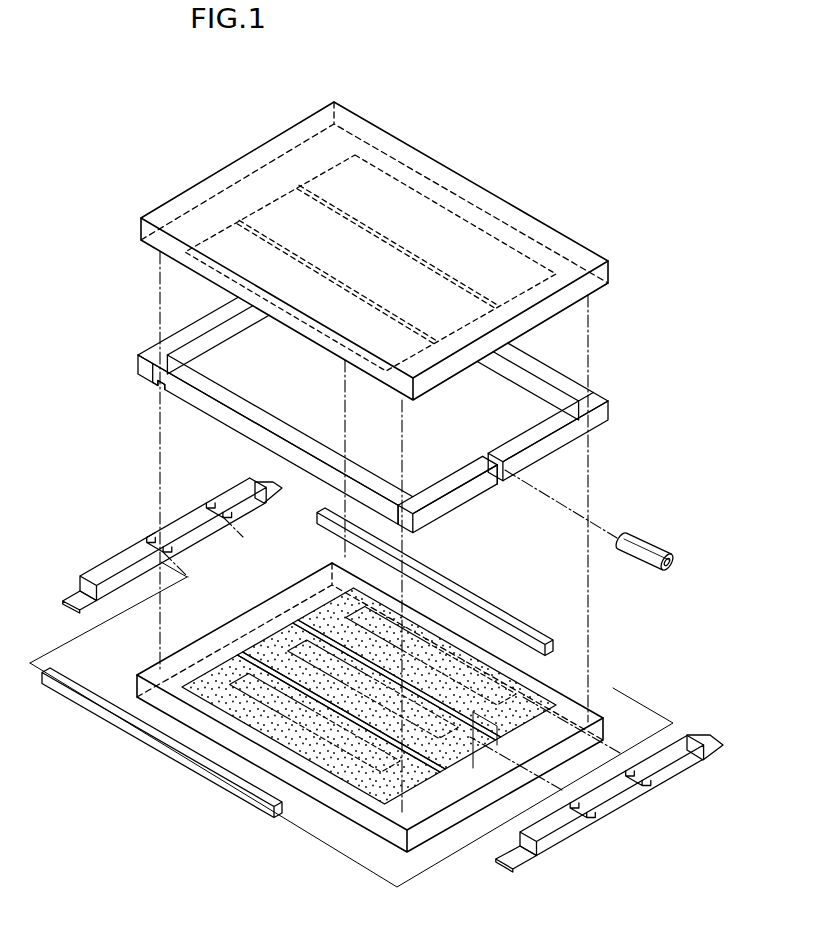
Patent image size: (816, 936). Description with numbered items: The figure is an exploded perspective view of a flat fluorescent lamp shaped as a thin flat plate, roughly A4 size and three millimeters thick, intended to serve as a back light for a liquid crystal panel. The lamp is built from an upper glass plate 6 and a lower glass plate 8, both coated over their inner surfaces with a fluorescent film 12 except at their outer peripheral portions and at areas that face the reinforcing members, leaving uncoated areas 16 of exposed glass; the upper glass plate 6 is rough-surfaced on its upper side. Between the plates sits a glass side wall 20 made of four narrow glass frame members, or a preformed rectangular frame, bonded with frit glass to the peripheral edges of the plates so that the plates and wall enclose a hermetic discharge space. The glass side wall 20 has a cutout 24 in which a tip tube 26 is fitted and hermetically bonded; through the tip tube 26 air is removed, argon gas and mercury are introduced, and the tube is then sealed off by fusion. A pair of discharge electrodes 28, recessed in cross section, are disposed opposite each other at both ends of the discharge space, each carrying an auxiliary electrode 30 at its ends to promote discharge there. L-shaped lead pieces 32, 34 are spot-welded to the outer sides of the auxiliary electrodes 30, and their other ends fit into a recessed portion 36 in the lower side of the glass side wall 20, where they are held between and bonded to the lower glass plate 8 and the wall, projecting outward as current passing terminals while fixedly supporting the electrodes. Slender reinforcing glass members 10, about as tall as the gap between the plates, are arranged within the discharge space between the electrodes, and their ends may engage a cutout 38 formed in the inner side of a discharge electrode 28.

The upper glass plate 6 is at (555, 237).
The lower glass plate 8 is at (355, 822).
The reinforcing glass member 10 is at (490, 600).
The fluorescent film 12 is at (327, 612).
The uncoated area 16 is at (292, 622).
The glass side wall 20 is at (346, 415).
The cutout 24 is at (497, 446).
The tip tube 26 is at (645, 540).
The discharge electrode 28 is at (364, 660).
The auxiliary electrode 30 is at (277, 502).
The lead piece 32 is at (63, 600).
The lead piece 34 is at (275, 487).
The recessed portion 36 is at (150, 380).
The cutout 38 is at (583, 805).